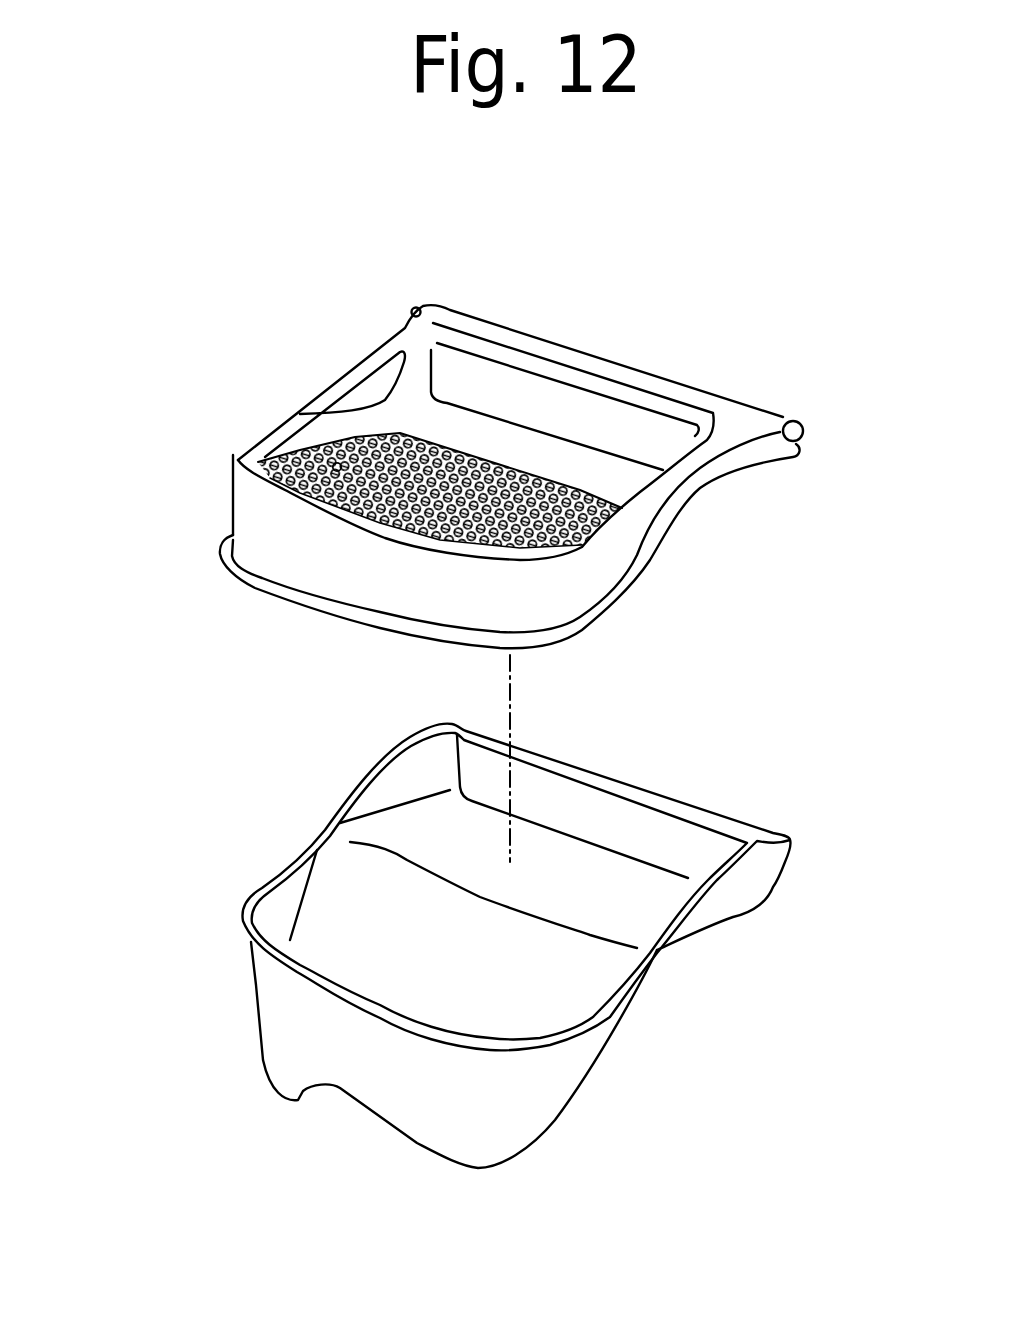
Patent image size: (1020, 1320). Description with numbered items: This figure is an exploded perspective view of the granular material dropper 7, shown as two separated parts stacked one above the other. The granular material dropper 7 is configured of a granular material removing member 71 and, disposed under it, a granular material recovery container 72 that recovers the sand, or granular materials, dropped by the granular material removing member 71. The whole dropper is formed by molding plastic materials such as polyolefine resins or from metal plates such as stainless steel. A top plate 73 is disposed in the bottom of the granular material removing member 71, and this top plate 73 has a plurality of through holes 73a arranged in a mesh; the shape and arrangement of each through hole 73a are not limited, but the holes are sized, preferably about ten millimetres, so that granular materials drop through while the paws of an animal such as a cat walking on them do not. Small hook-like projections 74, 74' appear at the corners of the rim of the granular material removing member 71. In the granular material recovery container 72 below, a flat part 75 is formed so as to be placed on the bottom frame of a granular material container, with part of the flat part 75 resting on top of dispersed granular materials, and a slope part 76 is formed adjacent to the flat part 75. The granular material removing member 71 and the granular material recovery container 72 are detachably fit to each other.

The granular material dropper 7 is at (328, 290).
The granular material removing member 71 is at (232, 518).
The granular material recovery container 72 is at (420, 1136).
The top plate 73 is at (238, 459).
The through holes 73a is at (336, 462).
The hook portion 74 is at (454, 249).
The hook portion 74' is at (820, 366).
The flat part 75 is at (610, 887).
The slope part 76 is at (530, 975).